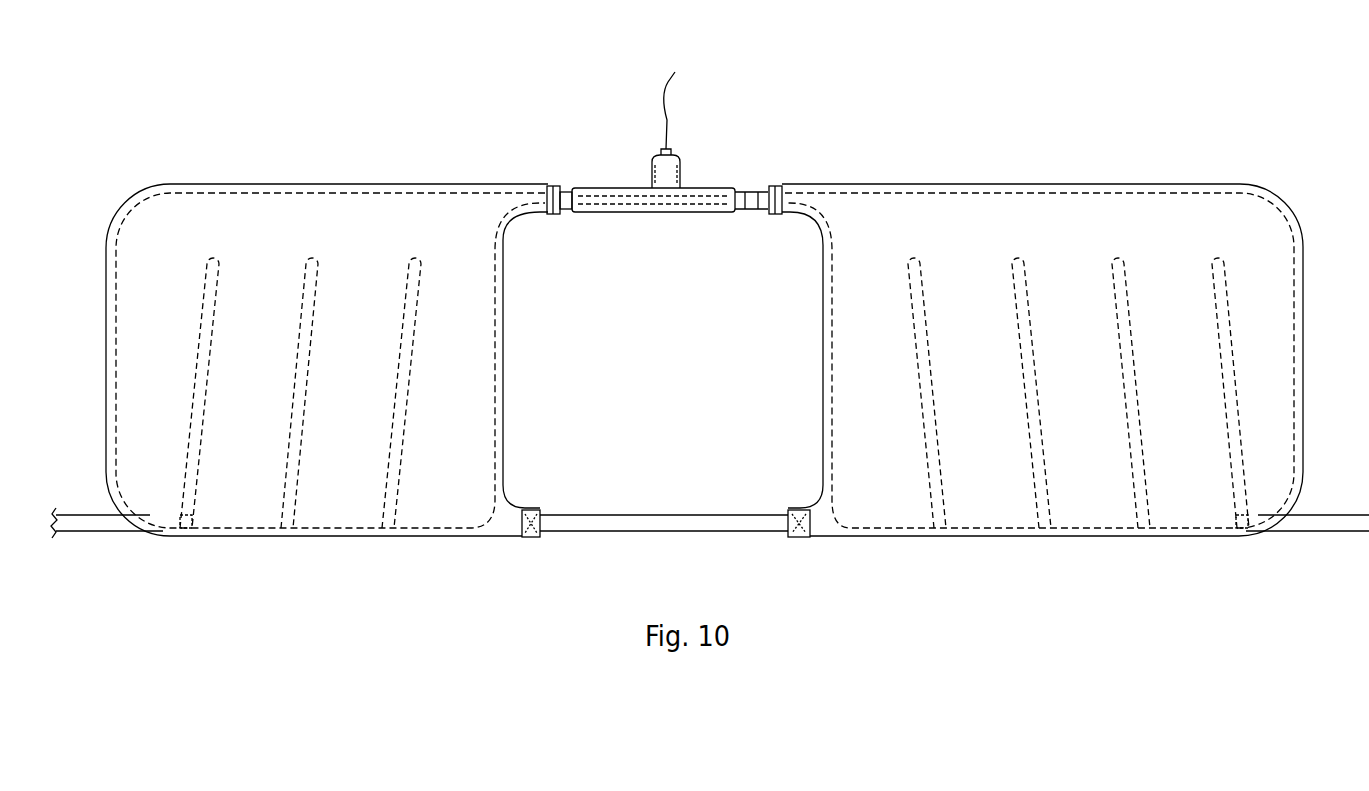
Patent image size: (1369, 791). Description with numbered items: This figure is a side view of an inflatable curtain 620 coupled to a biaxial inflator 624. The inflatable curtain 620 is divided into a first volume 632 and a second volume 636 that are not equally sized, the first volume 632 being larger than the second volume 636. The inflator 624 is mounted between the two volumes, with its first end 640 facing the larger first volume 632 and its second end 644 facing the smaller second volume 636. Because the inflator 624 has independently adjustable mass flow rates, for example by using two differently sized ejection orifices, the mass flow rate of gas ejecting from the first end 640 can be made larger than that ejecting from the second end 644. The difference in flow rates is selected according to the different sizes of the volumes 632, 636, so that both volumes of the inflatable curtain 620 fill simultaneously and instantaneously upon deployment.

The inflatable curtain 620 is at (1260, 142).
The biaxial inflator 624 is at (624, 176).
The first volume 632 is at (1068, 205).
The second volume 636 is at (290, 206).
The first end 640 is at (775, 183).
The second end 644 is at (553, 183).